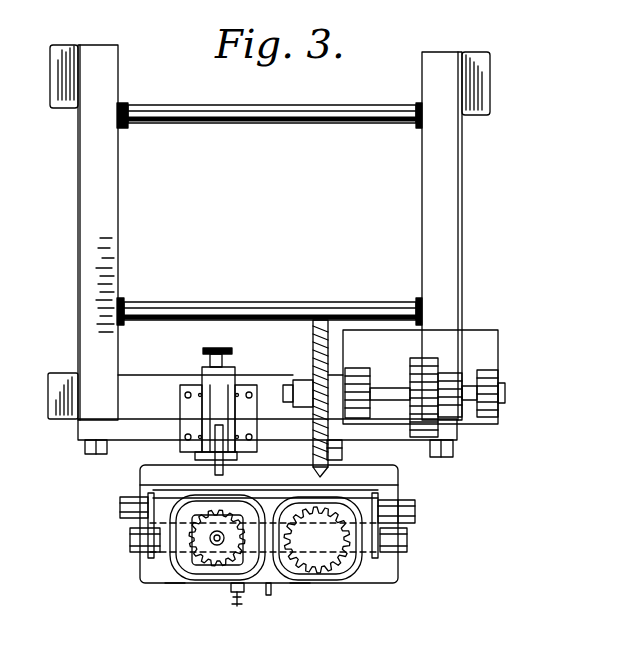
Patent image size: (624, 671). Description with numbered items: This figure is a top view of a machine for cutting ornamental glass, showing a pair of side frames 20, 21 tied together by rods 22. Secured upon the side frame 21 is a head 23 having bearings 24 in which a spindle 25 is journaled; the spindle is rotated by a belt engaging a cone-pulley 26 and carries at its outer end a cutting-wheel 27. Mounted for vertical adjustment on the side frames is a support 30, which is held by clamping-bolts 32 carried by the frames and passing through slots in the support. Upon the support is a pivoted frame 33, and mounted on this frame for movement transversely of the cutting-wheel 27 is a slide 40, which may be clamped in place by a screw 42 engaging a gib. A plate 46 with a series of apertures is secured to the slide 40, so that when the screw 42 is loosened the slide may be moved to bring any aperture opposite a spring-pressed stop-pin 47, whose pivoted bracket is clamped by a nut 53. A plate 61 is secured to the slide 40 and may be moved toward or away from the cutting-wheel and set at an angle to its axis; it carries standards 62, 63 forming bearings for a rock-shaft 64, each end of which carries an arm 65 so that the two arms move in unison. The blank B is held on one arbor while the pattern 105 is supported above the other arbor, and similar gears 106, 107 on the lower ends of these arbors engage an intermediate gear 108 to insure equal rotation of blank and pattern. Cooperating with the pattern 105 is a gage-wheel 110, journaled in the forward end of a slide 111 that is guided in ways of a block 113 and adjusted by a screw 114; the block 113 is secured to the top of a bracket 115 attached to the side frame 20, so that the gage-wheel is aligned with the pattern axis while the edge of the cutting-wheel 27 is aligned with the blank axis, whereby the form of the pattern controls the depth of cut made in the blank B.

The side frame 20 is at (77, 248).
The side frame 21 is at (452, 237).
The rods 22 is at (266, 126).
The head 23 is at (489, 360).
The bearings 24 is at (355, 377).
The spindle 25 is at (388, 394).
The cone-pulley 26 is at (446, 377).
The cutting-wheel 27 is at (313, 346).
The support 30 is at (78, 428).
The clamping-bolts 32 is at (85, 450).
The frame 33 is at (343, 452).
The slide 40 is at (385, 572).
The screw 42 is at (268, 598).
The plate 46 is at (183, 584).
The stop-pin 47 is at (238, 607).
The nut 53 is at (232, 594).
The plate 61 is at (367, 495).
The standard 62 is at (145, 504).
The standard 63 is at (405, 509).
The rock-shaft 64 is at (164, 497).
The arms 65 is at (130, 536).
The pattern 105 is at (202, 585).
The gear 106 is at (330, 582).
The gear 107 is at (172, 572).
The intermediate gear 108 is at (291, 578).
The gage-wheel 110 is at (226, 478).
The slide 111 is at (208, 378).
The block 113 is at (186, 408).
The screw 114 is at (222, 354).
The bracket 115 is at (137, 378).
The blank B is at (346, 590).